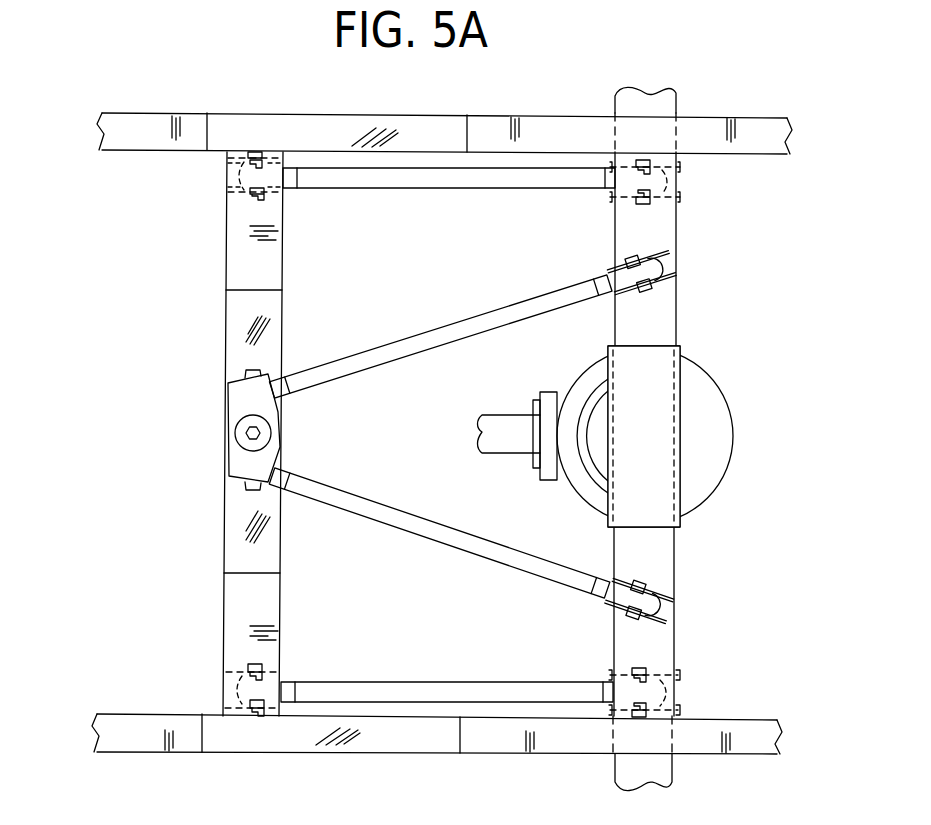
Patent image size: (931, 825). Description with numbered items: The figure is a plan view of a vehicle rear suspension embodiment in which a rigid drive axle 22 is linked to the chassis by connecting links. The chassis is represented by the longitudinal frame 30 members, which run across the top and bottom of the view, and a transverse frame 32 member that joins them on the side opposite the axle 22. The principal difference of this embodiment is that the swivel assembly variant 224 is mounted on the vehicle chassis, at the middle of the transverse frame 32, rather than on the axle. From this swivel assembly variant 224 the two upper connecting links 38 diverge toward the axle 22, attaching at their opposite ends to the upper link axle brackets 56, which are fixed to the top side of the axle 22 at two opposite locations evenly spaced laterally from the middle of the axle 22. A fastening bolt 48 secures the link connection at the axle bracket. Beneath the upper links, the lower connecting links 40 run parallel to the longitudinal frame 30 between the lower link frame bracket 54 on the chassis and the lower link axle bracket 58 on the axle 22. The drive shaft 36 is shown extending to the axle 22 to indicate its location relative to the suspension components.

The rigid drive axle 22 is at (663, 330).
The longitudinal frame 30 is at (418, 125).
The transverse frame 32 is at (237, 272).
The drive shaft 36 is at (500, 422).
The upper connecting link 38 is at (442, 330).
The lower connecting link 40 is at (425, 180).
The fastening bolt 48 is at (655, 578).
The lower link frame bracket 54 is at (228, 192).
The upper link axle bracket 56 is at (676, 286).
The lower link axle bracket 58 is at (676, 710).
The swivel assembly variant 224 is at (199, 445).